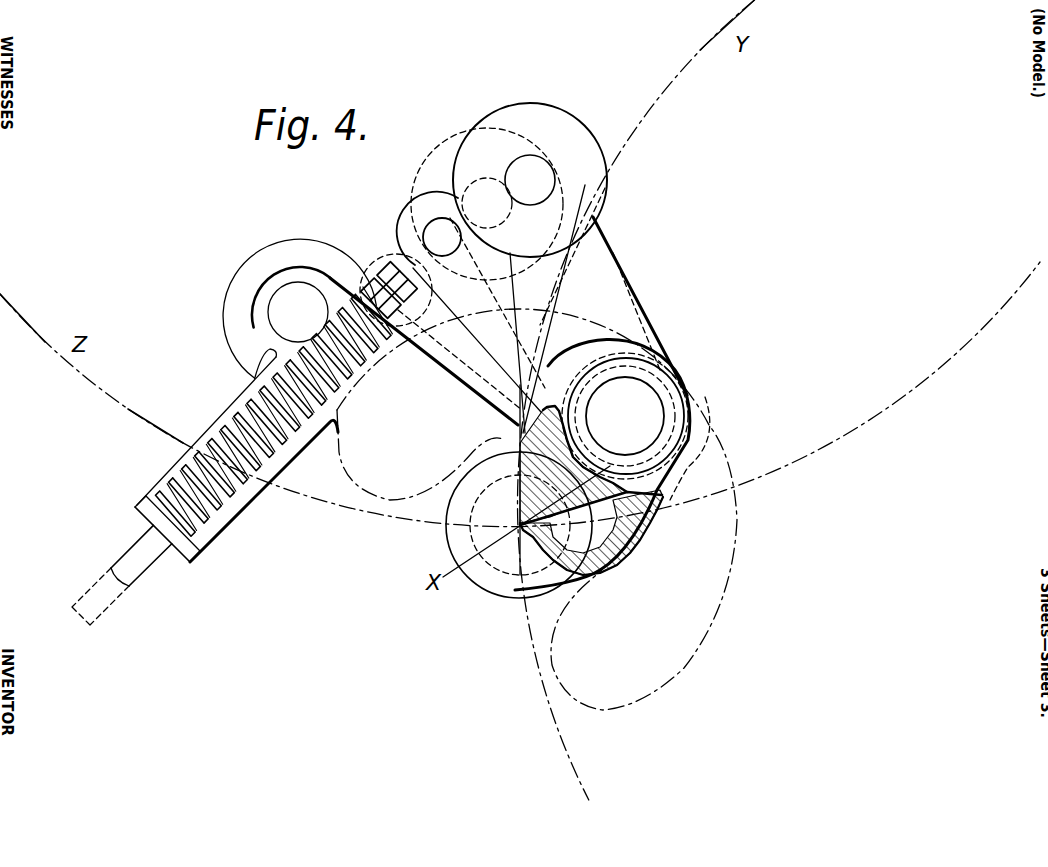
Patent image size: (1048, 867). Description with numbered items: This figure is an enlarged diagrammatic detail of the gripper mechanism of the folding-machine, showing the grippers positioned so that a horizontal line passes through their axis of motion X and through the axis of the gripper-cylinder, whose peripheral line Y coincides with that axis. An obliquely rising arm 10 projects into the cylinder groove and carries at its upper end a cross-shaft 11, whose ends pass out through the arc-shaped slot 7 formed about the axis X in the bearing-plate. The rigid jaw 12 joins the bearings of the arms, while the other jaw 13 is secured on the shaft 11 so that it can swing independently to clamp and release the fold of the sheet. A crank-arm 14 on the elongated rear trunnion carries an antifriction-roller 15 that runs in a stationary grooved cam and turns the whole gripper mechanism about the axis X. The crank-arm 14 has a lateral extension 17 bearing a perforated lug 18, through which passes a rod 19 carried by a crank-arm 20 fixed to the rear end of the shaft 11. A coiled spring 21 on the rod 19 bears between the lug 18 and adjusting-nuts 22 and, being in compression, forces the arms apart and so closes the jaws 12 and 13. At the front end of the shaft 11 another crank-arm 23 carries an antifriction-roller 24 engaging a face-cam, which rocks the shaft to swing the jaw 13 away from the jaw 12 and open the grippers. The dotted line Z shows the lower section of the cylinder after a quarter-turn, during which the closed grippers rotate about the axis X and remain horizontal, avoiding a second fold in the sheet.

The arc-shaped slot 7 is at (335, 463).
The arm 10 is at (492, 440).
The cross-shaft 11 is at (625, 416).
The jaw 12 is at (520, 498).
The jaw 13 is at (528, 544).
The crank-arm 14 is at (410, 445).
The antifriction-roller 15 is at (245, 267).
The lateral extension 17 is at (242, 495).
The lug 18 is at (150, 505).
The rod 19 is at (140, 552).
The crank-arm 20 is at (483, 337).
The coiled spring 21 is at (253, 403).
The adjusting-nuts 22 is at (381, 262).
The crank-arm 23 is at (612, 255).
The antifriction-roller 24 is at (580, 128).